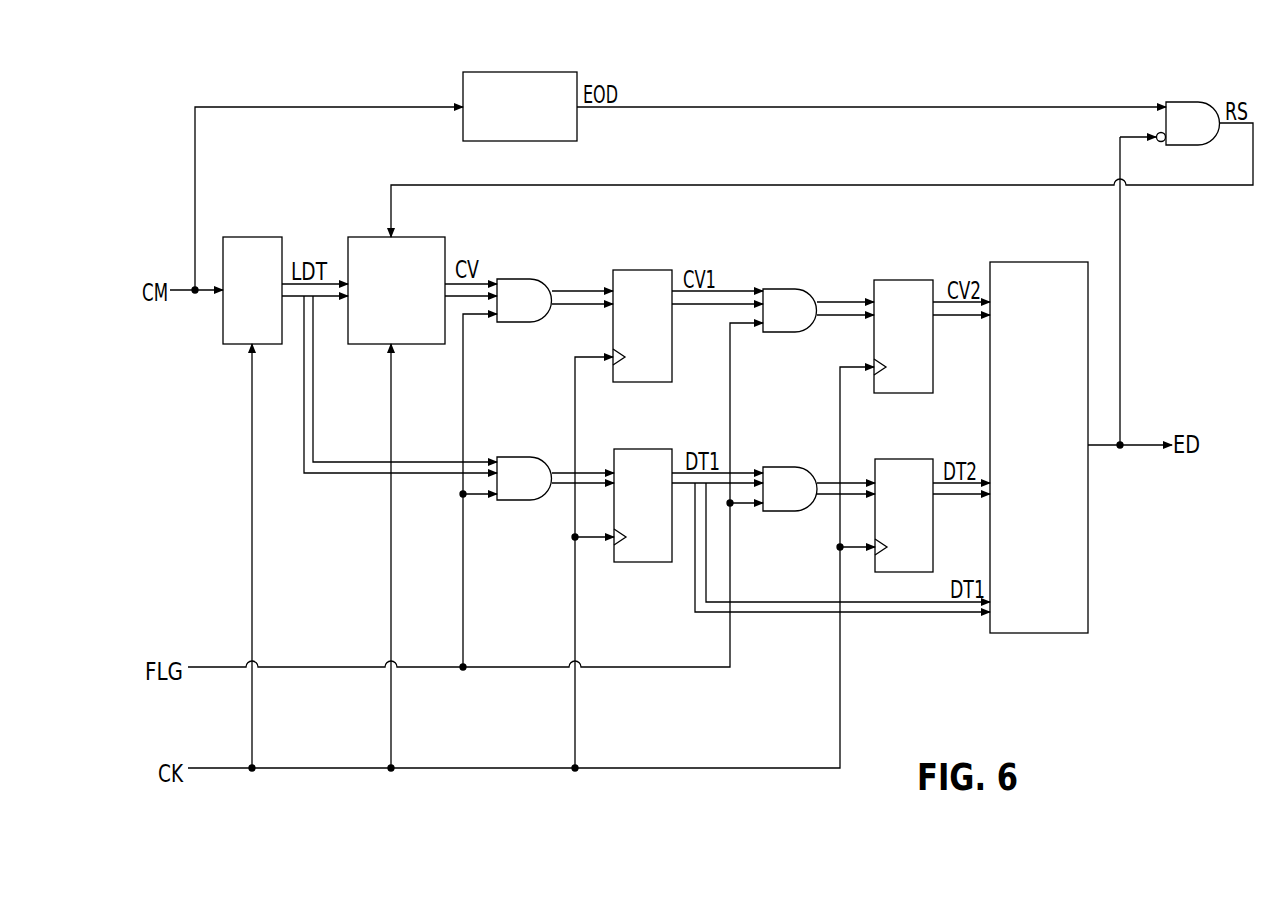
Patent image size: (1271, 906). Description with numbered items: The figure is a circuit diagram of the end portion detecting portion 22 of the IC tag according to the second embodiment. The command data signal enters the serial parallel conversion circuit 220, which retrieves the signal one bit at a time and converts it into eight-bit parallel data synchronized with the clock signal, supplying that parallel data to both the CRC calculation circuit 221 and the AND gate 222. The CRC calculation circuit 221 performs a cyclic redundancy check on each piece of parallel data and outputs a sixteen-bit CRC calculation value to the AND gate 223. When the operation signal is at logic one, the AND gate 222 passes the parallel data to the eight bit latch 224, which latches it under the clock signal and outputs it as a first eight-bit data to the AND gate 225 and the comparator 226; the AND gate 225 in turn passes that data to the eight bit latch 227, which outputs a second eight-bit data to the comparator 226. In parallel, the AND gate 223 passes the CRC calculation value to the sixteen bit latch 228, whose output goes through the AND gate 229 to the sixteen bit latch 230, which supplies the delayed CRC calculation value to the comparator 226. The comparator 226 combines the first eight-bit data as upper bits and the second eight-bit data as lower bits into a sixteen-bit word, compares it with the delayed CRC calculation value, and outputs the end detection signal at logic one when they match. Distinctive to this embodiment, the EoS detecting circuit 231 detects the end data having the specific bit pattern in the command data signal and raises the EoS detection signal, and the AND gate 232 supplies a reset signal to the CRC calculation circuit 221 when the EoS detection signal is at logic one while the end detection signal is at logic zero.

The end portion detecting portion 22 is at (322, 75).
The serial parallel conversion circuit 220 is at (258, 237).
The CRC calculation circuit 221 is at (420, 237).
The AND gate 222 is at (520, 457).
The AND gate 223 is at (520, 279).
The eight bit latch 224 is at (652, 449).
The AND gate 225 is at (780, 467).
The comparator 226 is at (1045, 262).
The eight bit latch 227 is at (912, 459).
The 16 bit latch 228 is at (652, 270).
The AND gate 229 is at (780, 289).
The 16 bit latch 230 is at (912, 280).
The EoS detecting circuit 231 is at (553, 72).
The AND gate 232 is at (1190, 102).